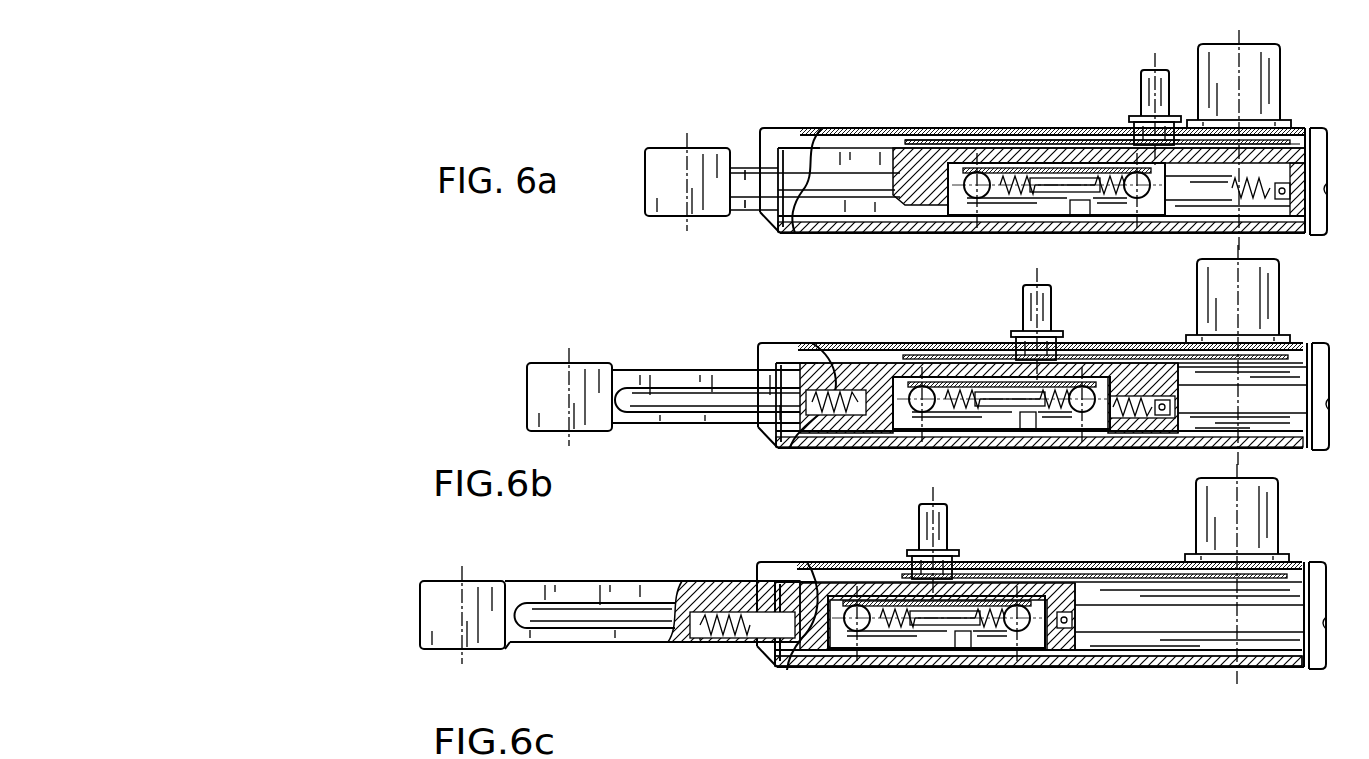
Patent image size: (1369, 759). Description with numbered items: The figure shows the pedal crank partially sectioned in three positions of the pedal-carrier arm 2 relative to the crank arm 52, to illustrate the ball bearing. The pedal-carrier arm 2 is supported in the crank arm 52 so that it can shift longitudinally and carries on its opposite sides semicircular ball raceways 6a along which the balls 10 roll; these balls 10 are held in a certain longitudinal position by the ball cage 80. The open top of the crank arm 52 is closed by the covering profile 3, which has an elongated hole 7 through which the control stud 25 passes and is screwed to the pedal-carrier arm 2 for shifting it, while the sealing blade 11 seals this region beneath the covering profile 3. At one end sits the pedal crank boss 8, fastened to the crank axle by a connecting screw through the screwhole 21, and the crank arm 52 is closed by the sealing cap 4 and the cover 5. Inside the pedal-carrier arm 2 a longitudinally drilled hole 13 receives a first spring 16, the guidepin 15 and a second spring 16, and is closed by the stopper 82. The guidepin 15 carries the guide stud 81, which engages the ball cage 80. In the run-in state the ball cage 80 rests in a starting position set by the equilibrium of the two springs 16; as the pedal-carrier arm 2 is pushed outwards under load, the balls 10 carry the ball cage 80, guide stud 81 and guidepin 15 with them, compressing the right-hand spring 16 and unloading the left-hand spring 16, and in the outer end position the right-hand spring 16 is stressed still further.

In FIG. 6a, the pedal-carrier arm 2 is at (655, 149).
In FIG. 6b, the pedal-carrier arm 2 is at (619, 361).
In FIG. 6a, the covering profile 3 is at (862, 130).
In FIG. 6c, the sealing cap 4 is at (1191, 671).
In FIG. 6a, the cover 5 is at (1329, 139).
In FIG. 6b, the cover 5 is at (1330, 368).
In FIG. 6c, the cover 5 is at (1323, 592).
In FIG. 6b, the semicircular ball raceways 6a is at (658, 406).
In FIG. 6c, the semicircular ball raceways 6a is at (636, 606).
In FIG. 6a, the elongated hole 7 is at (960, 140).
In FIG. 6a, the pedal crank boss 8 is at (1283, 84).
In FIG. 6b, the pedal crank boss 8 is at (1281, 290).
In FIG. 6c, the pedal crank boss 8 is at (1279, 518).
In FIG. 6a, the balls 10 is at (1144, 206).
In FIG. 6b, the balls 10 is at (1001, 403).
In FIG. 6c, the balls 10 is at (1022, 600).
In FIG. 6a, the sealing blade 11 is at (1007, 140).
In FIG. 6c, the longitudinally drilled hole 13 is at (792, 659).
In FIG. 6a, the guidepin 15 is at (1048, 193).
In FIG. 6a, the springs 16 is at (978, 199).
In FIG. 6b, the springs 16 is at (927, 430).
In FIG. 6c, the screwhole 21 is at (1250, 657).
In FIG. 6a, the control stud 25 is at (1142, 100).
In FIG. 6b, the control stud 25 is at (1023, 312).
In FIG. 6c, the control stud 25 is at (949, 532).
In FIG. 6c, the crank arm 52 is at (1109, 673).
In FIG. 6b, the ball cage 80 is at (906, 390).
In FIG. 6c, the ball cage 80 is at (808, 624).
In FIG. 6b, the guide stud 81 is at (1027, 431).
In FIG. 6c, the stopper 82 is at (1068, 633).